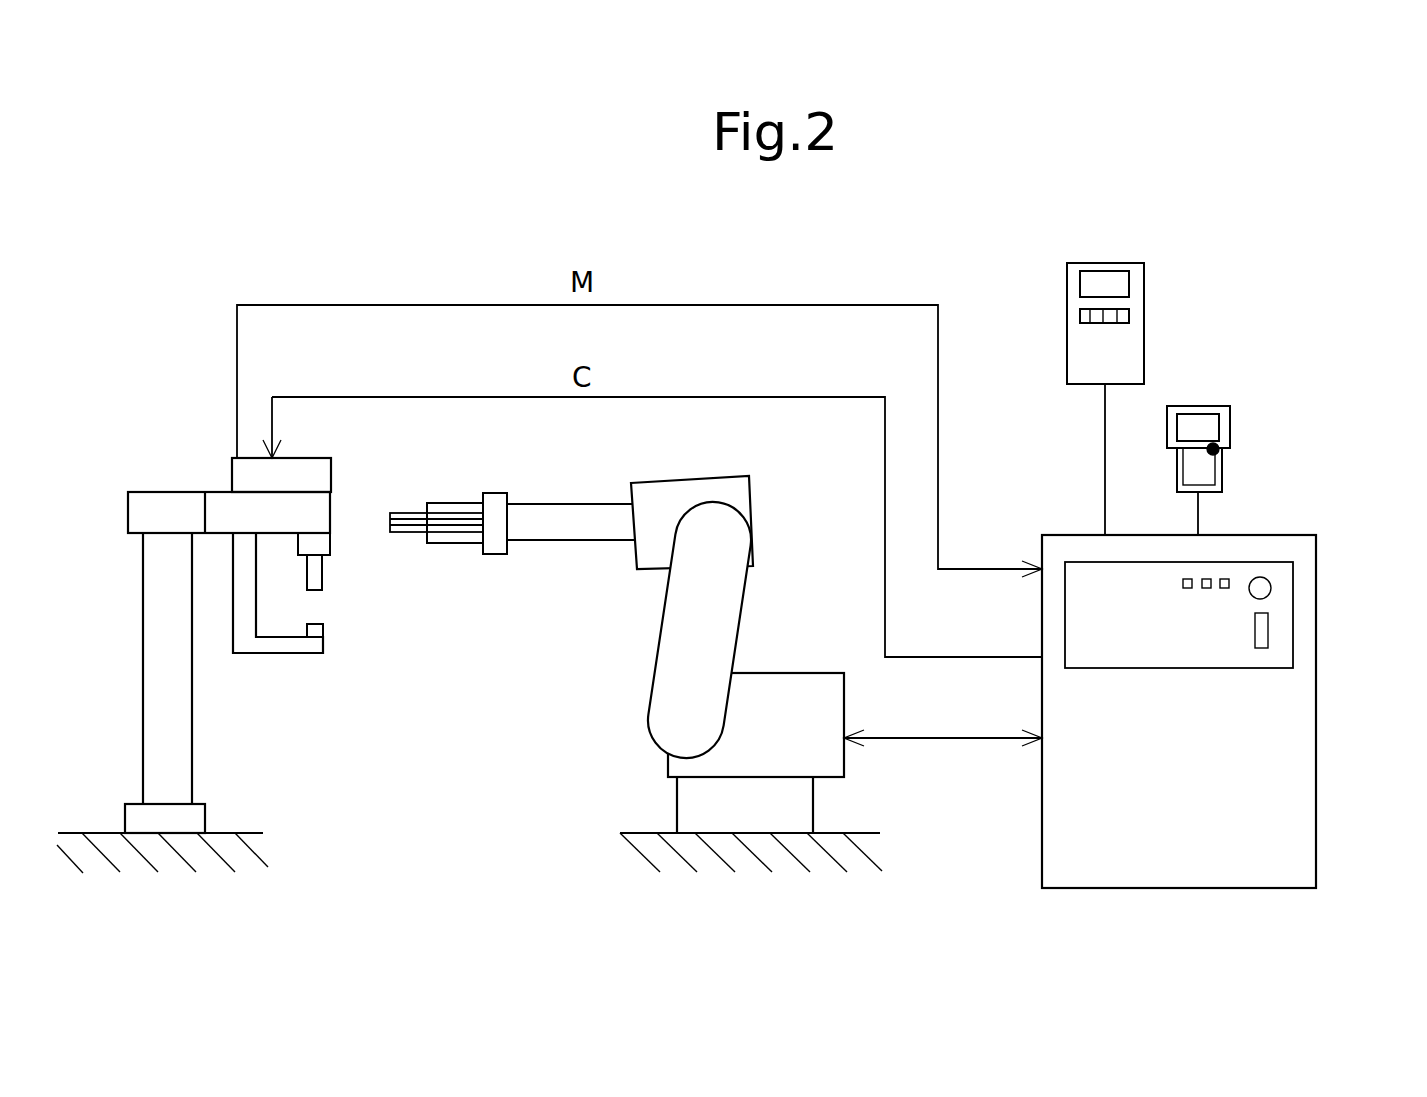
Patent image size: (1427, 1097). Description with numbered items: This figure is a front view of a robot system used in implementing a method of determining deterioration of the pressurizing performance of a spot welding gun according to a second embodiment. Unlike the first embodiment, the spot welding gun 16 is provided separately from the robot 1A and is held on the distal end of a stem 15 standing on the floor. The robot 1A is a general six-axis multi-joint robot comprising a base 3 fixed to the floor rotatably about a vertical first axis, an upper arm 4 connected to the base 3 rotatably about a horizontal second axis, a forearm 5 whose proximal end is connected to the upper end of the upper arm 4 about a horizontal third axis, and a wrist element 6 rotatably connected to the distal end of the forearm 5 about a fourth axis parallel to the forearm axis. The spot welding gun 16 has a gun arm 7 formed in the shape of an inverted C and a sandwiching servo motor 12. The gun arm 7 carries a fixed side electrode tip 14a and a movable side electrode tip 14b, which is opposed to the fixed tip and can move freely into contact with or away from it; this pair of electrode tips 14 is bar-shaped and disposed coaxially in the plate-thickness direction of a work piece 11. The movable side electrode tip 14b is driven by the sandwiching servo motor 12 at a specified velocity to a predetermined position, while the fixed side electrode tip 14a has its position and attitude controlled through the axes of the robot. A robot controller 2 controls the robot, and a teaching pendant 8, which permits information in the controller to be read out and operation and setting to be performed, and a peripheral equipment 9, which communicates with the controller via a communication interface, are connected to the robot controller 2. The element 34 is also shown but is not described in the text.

The robot 1A is at (760, 647).
The robot controller 2 is at (1340, 656).
The base 3 is at (828, 708).
The upper arm 4 is at (727, 622).
The forearm 5 is at (682, 493).
The wrist element 6 is at (567, 512).
The gun arm 7 is at (243, 603).
The teaching pendant 8 is at (1172, 427).
The peripheral equipment 9 is at (1138, 320).
The work piece 11 is at (392, 515).
The sandwiching servo motor 12 is at (322, 473).
The pair of electrode tips 14 is at (386, 598).
The fixed side electrode tip 14a is at (323, 630).
The movable side electrode tip 14b is at (322, 578).
The stem 15 is at (192, 722).
The spot welding gun 16 is at (438, 543).
The tool holder 34 is at (468, 543).